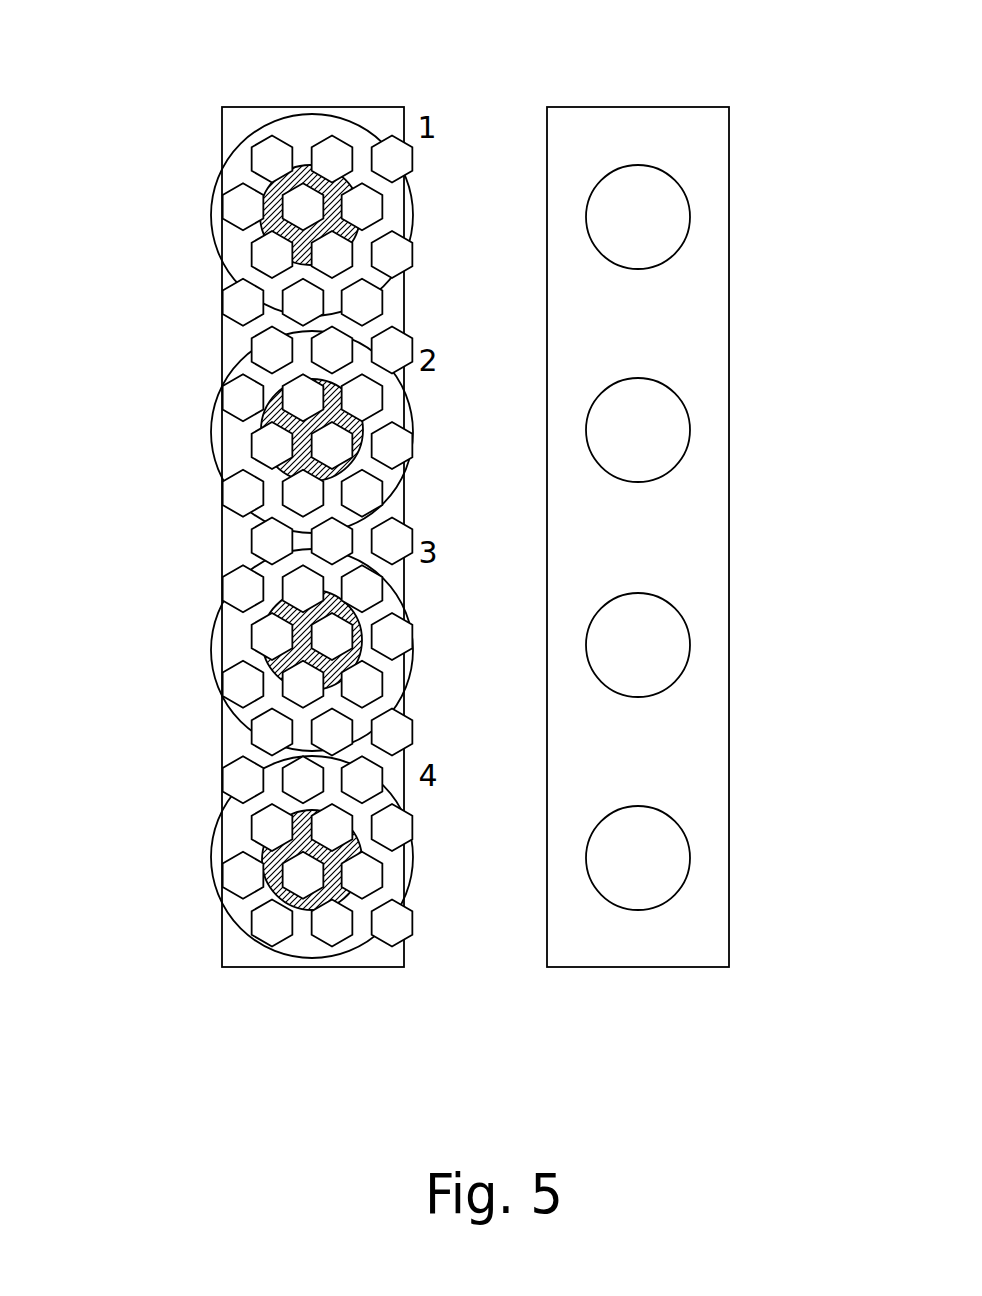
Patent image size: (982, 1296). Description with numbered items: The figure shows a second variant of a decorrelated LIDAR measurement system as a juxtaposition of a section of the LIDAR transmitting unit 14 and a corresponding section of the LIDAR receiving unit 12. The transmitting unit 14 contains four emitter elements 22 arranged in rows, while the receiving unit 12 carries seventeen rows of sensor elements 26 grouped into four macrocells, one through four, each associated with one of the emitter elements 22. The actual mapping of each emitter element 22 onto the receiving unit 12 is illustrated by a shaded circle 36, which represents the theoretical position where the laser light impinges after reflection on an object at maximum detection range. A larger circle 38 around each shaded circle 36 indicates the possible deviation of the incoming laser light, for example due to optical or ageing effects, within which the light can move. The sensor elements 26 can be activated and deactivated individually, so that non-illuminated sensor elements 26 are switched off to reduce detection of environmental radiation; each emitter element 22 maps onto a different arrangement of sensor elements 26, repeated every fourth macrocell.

The LIDAR receiving unit 12 is at (210, 930).
The LIDAR transmitting unit 14 is at (768, 102).
The emitter element 22 is at (620, 233).
The sensor element 26 is at (394, 163).
The circle representing the mapping of laser light 36 is at (360, 233).
The deviation circle 38 is at (410, 193).